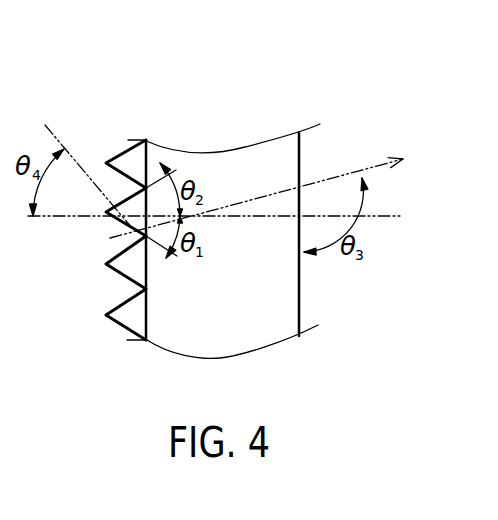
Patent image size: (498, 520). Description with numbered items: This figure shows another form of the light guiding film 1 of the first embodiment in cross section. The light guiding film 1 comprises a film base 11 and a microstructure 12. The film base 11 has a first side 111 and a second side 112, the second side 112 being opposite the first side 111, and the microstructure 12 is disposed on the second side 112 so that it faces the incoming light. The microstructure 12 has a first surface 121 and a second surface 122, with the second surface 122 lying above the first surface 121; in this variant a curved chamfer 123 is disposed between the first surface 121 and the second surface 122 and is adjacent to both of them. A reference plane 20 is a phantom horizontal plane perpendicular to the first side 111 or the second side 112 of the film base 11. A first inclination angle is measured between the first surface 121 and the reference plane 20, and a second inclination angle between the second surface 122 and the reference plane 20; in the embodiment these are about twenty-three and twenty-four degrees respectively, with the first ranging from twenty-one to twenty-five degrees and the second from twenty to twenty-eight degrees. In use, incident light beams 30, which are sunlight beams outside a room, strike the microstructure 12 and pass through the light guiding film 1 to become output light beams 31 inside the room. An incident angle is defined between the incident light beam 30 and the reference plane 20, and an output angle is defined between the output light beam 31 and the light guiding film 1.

The light guiding film 1 is at (247, 82).
The film base 11 is at (219, 154).
The first side 111 is at (299, 158).
The second side 112 is at (126, 148).
The microstructure 12 is at (113, 217).
The first surface 121 is at (128, 229).
The second surface 122 is at (108, 160).
The curved chamfer 123 is at (139, 289).
The reference plane 20 is at (380, 217).
The incident light beams 30 is at (78, 153).
The output light beams 31 is at (338, 175).